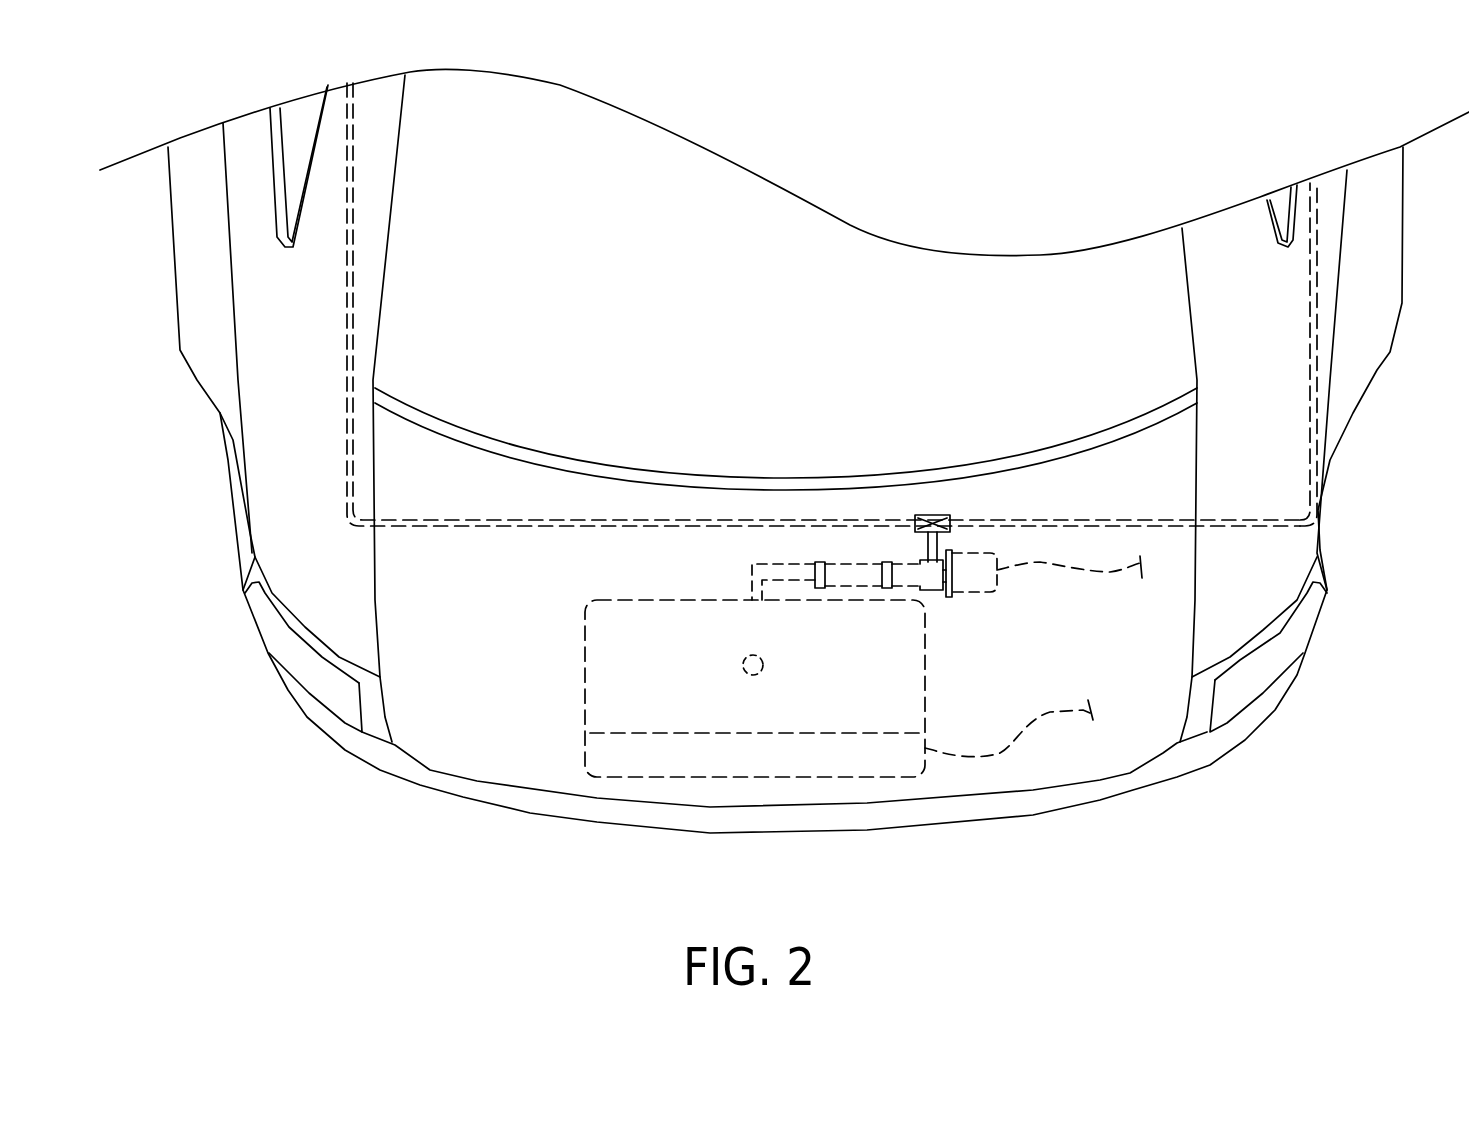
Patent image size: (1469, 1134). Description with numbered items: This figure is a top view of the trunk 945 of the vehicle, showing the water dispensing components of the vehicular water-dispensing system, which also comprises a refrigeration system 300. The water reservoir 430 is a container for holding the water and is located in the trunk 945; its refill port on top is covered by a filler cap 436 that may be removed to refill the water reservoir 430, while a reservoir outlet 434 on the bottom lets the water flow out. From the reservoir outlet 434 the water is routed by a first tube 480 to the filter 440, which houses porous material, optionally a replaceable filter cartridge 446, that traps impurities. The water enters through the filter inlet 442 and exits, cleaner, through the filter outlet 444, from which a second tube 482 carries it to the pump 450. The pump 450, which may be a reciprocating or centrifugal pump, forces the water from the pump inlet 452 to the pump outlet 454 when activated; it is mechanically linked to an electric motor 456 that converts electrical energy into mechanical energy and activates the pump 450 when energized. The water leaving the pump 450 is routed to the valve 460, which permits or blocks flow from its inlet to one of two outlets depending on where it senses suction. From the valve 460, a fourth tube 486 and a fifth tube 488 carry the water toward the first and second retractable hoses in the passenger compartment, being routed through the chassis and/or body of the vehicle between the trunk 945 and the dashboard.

The refrigeration system 300 is at (597, 778).
The water reservoir 430 is at (593, 672).
The reservoir outlet 434 is at (750, 600).
The filler cap 436 is at (748, 677).
The filter 440 is at (818, 562).
The filter inlet 442 is at (813, 574).
The filter outlet 444 is at (905, 568).
The filter cartridge 446 is at (835, 563).
The pump 450 is at (923, 590).
The pump inlet 452 is at (913, 600).
The pump outlet 454 is at (938, 570).
The electric motor 456 is at (990, 590).
The valve 460 is at (930, 515).
The first tube 480 is at (785, 582).
The second tube 482 is at (903, 565).
The fourth tube 486 is at (350, 447).
The fifth tube 488 is at (1317, 418).
The trunk 945 is at (1140, 708).